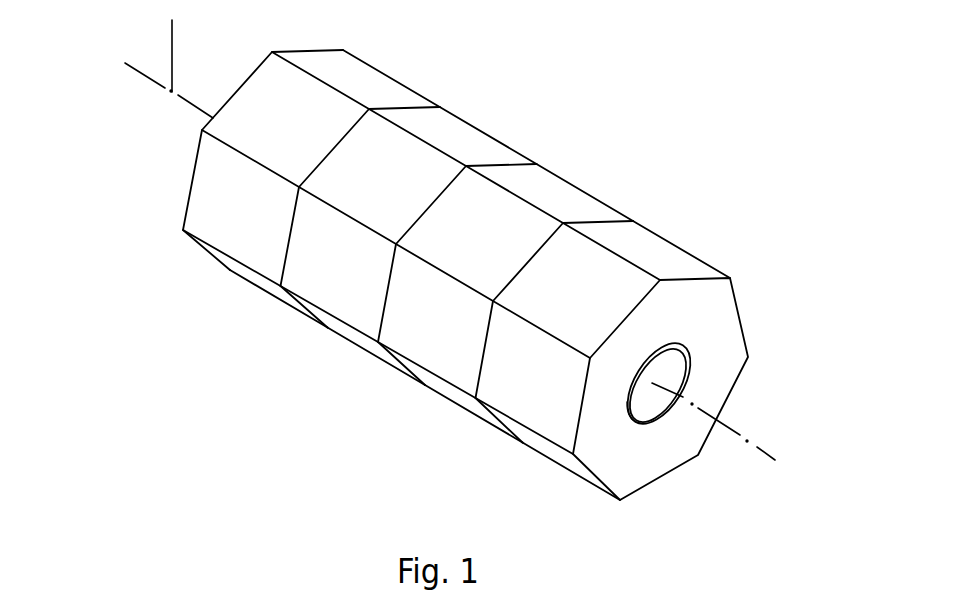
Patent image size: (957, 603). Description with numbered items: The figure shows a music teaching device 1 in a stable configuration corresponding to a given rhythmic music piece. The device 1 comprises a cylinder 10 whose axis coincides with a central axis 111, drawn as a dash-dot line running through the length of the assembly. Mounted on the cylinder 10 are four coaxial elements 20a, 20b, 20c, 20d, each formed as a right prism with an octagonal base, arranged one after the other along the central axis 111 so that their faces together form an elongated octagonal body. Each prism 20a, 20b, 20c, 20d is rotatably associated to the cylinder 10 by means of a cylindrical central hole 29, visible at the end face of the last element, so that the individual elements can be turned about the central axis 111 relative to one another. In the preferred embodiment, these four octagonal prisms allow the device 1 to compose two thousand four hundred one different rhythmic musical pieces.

The music teaching device 1 is at (117, 71).
The central axis 111 is at (197, 51).
The cylinder 10 is at (654, 400).
The cylindrical central hole 29 is at (688, 375).
The coaxial element 20a is at (228, 215).
The coaxial element 20b is at (333, 272).
The coaxial element 20c is at (445, 330).
The coaxial element 20d is at (535, 400).